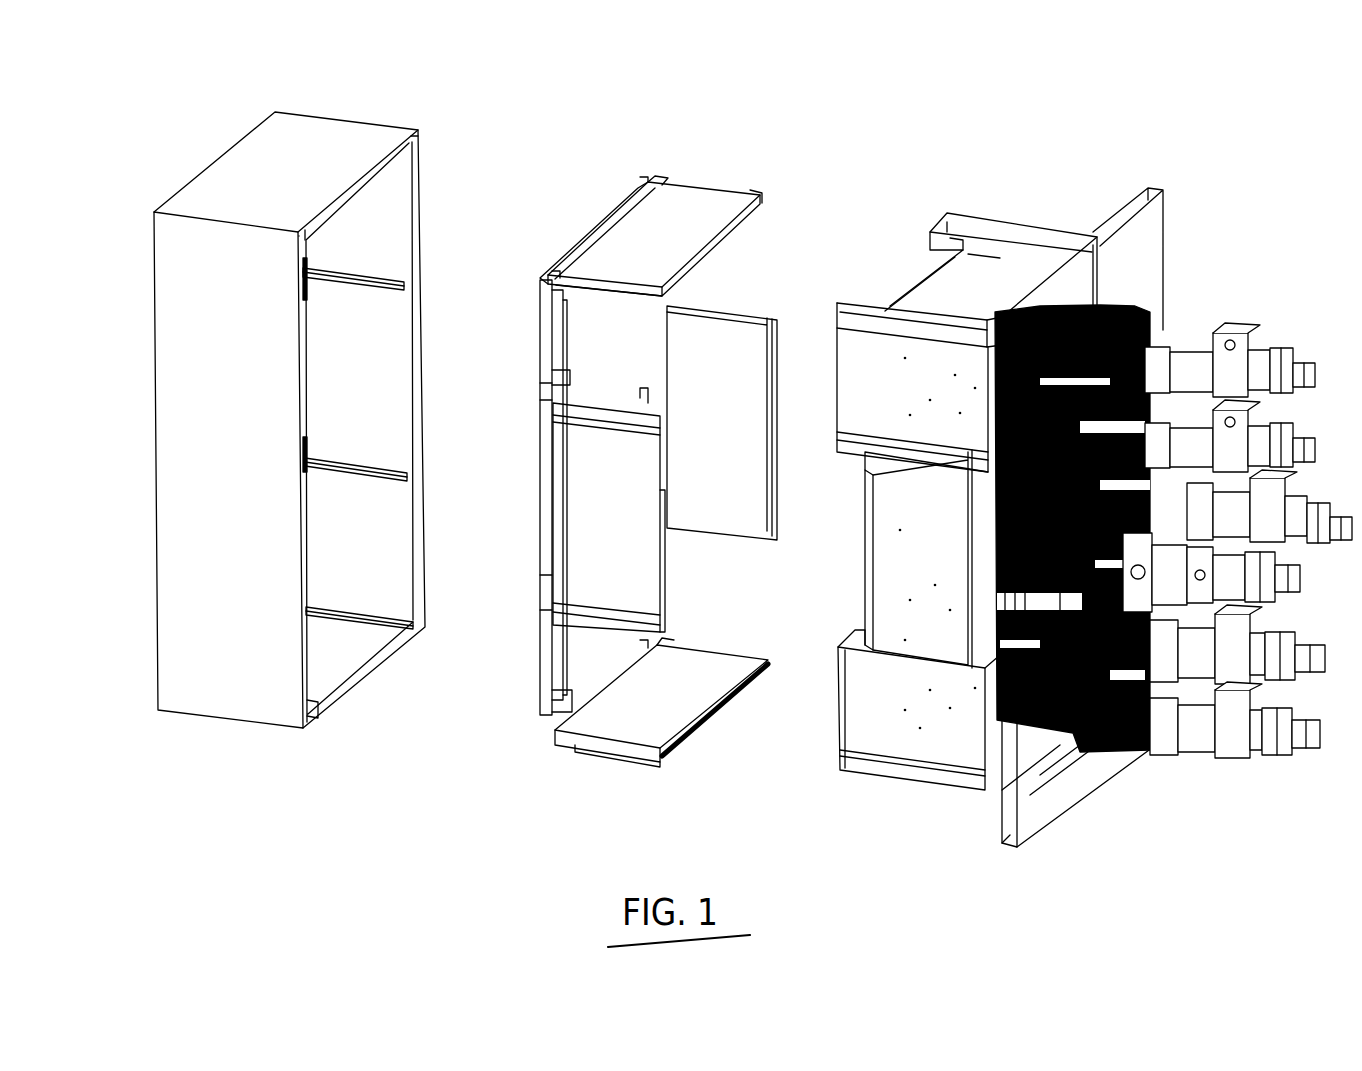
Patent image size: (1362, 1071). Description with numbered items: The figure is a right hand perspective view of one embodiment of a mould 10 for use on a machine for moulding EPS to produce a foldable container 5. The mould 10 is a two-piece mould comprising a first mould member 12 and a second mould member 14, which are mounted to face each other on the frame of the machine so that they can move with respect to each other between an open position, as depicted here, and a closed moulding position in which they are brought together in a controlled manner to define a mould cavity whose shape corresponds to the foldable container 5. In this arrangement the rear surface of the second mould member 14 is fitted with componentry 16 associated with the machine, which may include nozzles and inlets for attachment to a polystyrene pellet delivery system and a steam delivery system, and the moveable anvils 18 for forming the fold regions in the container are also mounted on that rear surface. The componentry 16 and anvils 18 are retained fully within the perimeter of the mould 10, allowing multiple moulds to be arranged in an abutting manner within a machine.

The mould 10 is at (1196, 168).
The first mould member 12 is at (353, 120).
The foldable container 5 is at (727, 175).
The second mould member 14 is at (998, 236).
The componentry 16 is at (1172, 792).
The moveable anvils 18 is at (1260, 336).